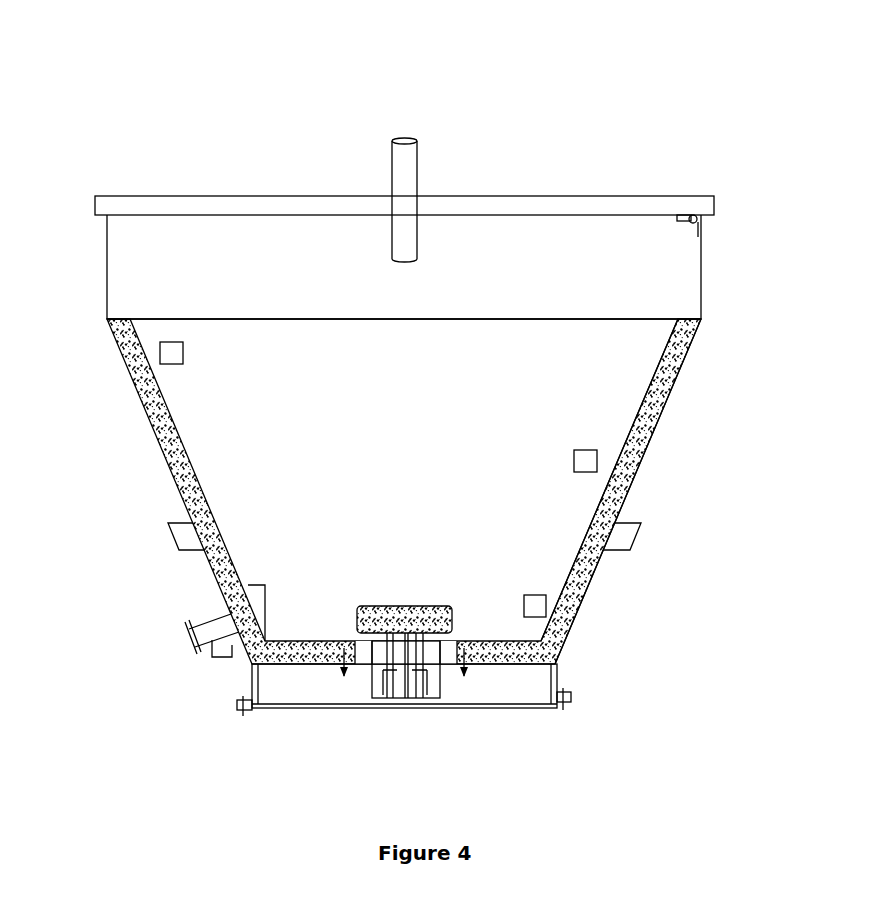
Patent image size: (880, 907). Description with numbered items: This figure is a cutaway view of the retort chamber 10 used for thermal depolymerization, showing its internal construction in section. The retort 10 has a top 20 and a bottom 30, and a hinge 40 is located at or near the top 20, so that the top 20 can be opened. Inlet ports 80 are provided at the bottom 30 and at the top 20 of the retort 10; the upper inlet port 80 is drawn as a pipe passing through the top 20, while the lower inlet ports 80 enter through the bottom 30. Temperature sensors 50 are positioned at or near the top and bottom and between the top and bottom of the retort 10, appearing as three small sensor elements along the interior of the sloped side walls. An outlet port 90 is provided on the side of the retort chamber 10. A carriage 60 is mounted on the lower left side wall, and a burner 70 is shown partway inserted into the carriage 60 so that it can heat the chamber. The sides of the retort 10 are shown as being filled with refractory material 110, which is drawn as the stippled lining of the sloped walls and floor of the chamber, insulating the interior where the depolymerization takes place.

The retort chamber 10 is at (101, 469).
The top 20 is at (642, 180).
The bottom 30 is at (531, 717).
The hinge 40 is at (655, 256).
The temperature sensors 50 is at (191, 353).
The carriage 60 is at (198, 612).
The burner 70 is at (177, 650).
The inlet ports 80 is at (420, 77).
The outlet port 90 is at (641, 512).
The refractory material 110 is at (686, 397).